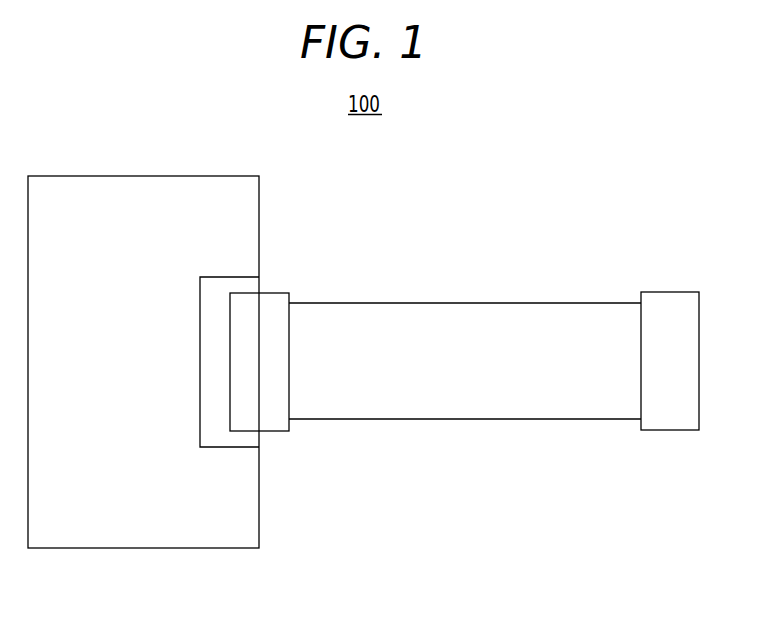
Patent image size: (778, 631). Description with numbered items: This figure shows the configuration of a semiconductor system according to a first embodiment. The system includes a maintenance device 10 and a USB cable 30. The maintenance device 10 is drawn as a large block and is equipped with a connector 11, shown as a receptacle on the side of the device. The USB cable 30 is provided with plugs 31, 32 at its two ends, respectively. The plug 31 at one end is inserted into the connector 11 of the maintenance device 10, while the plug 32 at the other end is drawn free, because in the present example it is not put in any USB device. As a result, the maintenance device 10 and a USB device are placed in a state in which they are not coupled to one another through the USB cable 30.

The maintenance device 10 is at (145, 175).
The connector 11 is at (229, 277).
The USB cable 30 is at (448, 302).
The plug 31 is at (277, 291).
The plug 32 is at (657, 291).